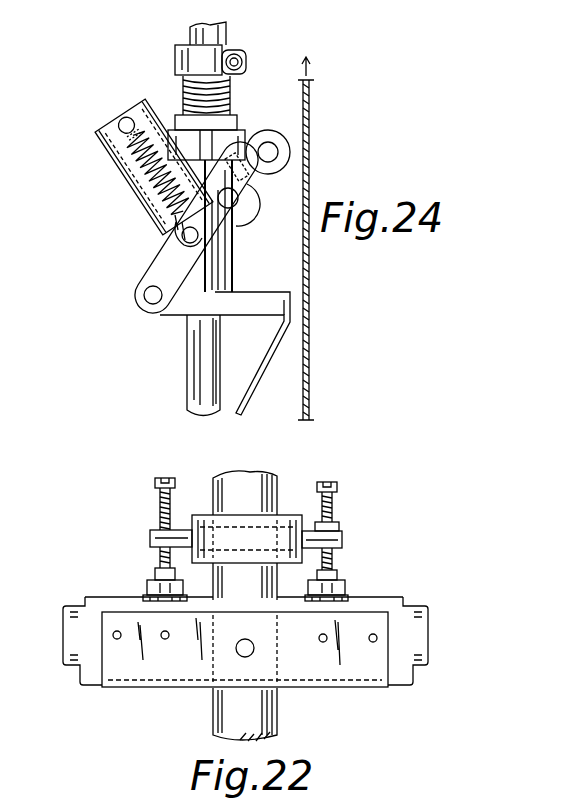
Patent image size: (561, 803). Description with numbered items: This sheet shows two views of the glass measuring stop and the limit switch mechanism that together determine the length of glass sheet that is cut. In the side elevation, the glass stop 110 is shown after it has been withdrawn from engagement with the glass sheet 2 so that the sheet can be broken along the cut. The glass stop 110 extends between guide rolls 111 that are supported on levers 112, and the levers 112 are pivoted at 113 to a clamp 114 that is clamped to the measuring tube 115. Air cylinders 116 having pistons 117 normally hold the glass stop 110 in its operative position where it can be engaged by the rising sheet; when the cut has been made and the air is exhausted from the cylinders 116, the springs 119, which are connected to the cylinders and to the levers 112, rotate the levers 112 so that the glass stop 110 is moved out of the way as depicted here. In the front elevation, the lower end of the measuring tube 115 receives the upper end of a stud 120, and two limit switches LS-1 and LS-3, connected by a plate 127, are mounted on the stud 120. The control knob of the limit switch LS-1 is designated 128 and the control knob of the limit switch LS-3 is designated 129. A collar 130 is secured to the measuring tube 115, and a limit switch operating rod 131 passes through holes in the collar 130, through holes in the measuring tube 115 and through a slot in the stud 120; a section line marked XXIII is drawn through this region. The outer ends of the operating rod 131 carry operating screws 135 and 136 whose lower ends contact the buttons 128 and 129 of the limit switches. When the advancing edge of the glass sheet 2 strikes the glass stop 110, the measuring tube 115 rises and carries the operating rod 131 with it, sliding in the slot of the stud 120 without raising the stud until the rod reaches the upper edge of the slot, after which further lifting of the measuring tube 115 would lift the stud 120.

In FIG. 24, the glass sheet 2 is at (310, 119).
In FIG. 24, the glass stop 110 is at (252, 178).
In FIG. 24, the guide rolls 111 is at (270, 132).
In FIG. 24, the levers 112 is at (150, 279).
In FIG. 24, the pivot 113 is at (147, 297).
In FIG. 24, the clamp 114 is at (229, 271).
In FIG. 24, the measuring tube 115 is at (223, 36).
In FIG. 22, the measuring tube 115 is at (218, 476).
In FIG. 24, the air cylinders 116 is at (108, 132).
In FIG. 24, the pistons 117 is at (124, 158).
In FIG. 24, the springs 119 is at (142, 192).
In FIG. 22, the stud 120 is at (272, 718).
In FIG. 22, the plate 127 is at (106, 660).
In FIG. 22, the control knob of limit switch LS-1 128 is at (156, 575).
In FIG. 22, the control knob of limit switch LS-3 129 is at (336, 576).
In FIG. 22, the collar 130 is at (298, 514).
In FIG. 22, the limit switch operating rod 131 is at (342, 541).
In FIG. 22, the operating screw 135 is at (160, 510).
In FIG. 22, the operating screw 136 is at (334, 510).
In FIG. 22, the limit switch LS-1 is at (68, 650).
In FIG. 22, the limit switch LS-3 is at (426, 650).
In FIG. 22, the section line XXIII is at (250, 575).